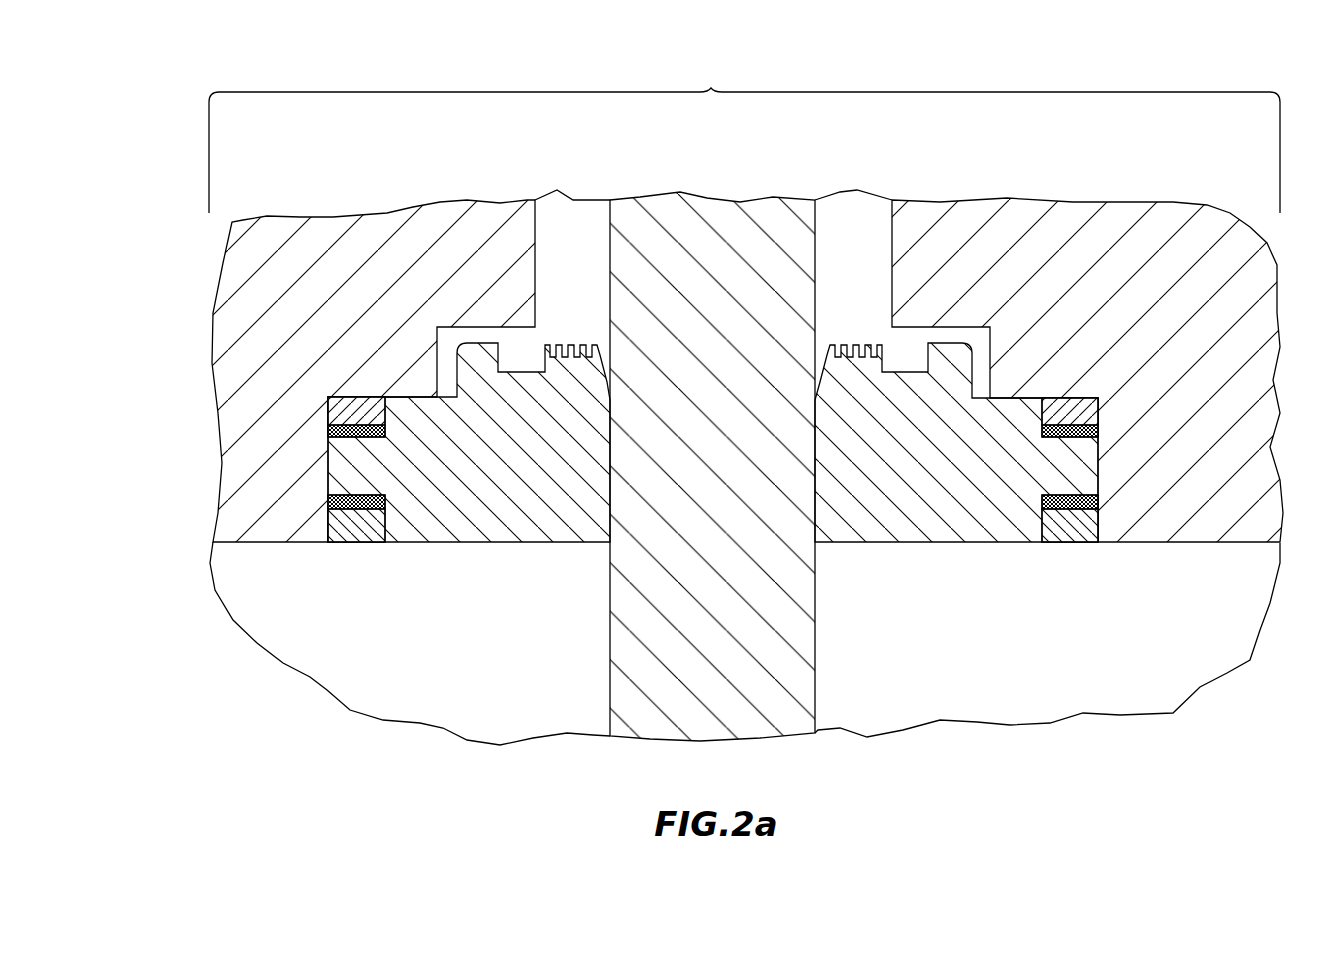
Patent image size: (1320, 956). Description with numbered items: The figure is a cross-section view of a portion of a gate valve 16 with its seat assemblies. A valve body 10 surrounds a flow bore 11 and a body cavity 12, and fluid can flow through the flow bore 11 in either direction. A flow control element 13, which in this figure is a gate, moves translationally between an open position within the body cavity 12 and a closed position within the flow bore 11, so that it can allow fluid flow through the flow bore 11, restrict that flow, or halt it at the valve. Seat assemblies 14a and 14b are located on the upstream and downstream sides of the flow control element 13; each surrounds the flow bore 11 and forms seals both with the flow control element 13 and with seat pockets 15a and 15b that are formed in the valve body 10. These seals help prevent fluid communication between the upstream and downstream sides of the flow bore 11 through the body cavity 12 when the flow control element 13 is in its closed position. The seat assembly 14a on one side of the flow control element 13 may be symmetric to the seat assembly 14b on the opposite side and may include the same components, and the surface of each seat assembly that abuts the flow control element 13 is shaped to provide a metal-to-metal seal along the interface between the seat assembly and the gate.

The valve body 10 is at (232, 321).
The flow bore 11 is at (420, 700).
The body cavity 12 is at (559, 232).
The flow control element 13 is at (722, 391).
The seat assembly 14a is at (490, 545).
The seat assembly 14b is at (935, 545).
The seat pocket 15a is at (328, 398).
The seat pocket 15b is at (1100, 394).
The valve 16 is at (713, 92).